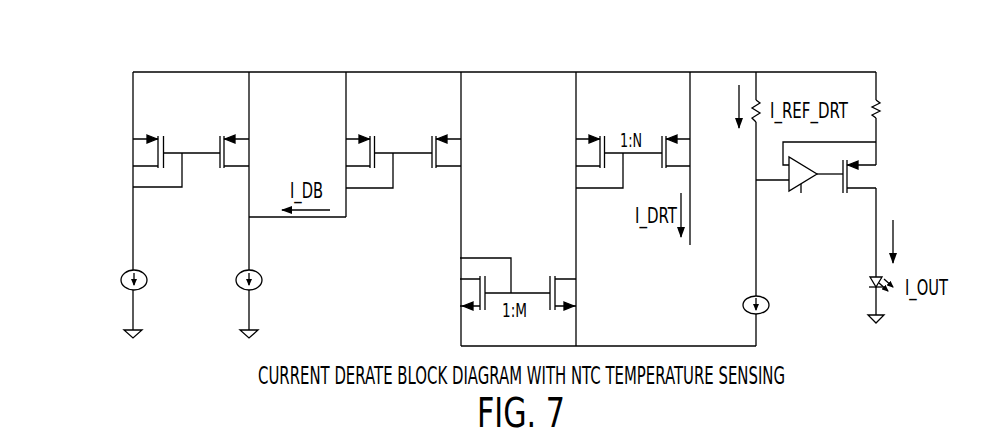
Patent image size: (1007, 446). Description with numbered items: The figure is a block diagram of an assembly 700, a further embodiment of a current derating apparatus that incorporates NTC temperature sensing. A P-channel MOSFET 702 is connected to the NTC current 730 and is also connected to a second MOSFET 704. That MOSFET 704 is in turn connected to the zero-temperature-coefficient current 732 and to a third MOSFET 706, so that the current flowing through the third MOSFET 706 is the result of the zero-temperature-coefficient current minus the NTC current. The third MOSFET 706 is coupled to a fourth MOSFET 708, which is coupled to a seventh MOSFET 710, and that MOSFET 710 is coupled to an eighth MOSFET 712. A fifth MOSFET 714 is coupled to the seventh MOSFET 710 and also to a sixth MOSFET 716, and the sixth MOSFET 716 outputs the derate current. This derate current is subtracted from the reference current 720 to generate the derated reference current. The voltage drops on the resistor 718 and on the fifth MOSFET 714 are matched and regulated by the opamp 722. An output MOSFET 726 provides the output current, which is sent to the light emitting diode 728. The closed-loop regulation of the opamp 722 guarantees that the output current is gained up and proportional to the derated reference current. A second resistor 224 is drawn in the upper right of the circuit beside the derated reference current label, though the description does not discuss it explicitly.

The assembly 700 is at (930, 58).
The P-channel MOSFET M1 702 is at (130, 156).
The MOSFET M2 704 is at (253, 152).
The MOSFET M3 706 is at (340, 155).
The MOSFET M4 708 is at (468, 153).
The MOSFET M7 710 is at (448, 292).
The MOSFET M8 712 is at (589, 293).
The MOSFET M5 714 is at (573, 155).
The MOSFET M6 716 is at (696, 154).
The resistor 718 is at (754, 102).
The I_REF current 720 is at (742, 304).
The opamp 722 is at (786, 196).
The MOSFET 726 is at (874, 180).
The light emitting diode (LED) 728 is at (899, 272).
The I_NTC current 730 is at (123, 270).
The I_ZTC current 732 is at (263, 279).
The resistor 224 is at (891, 108).